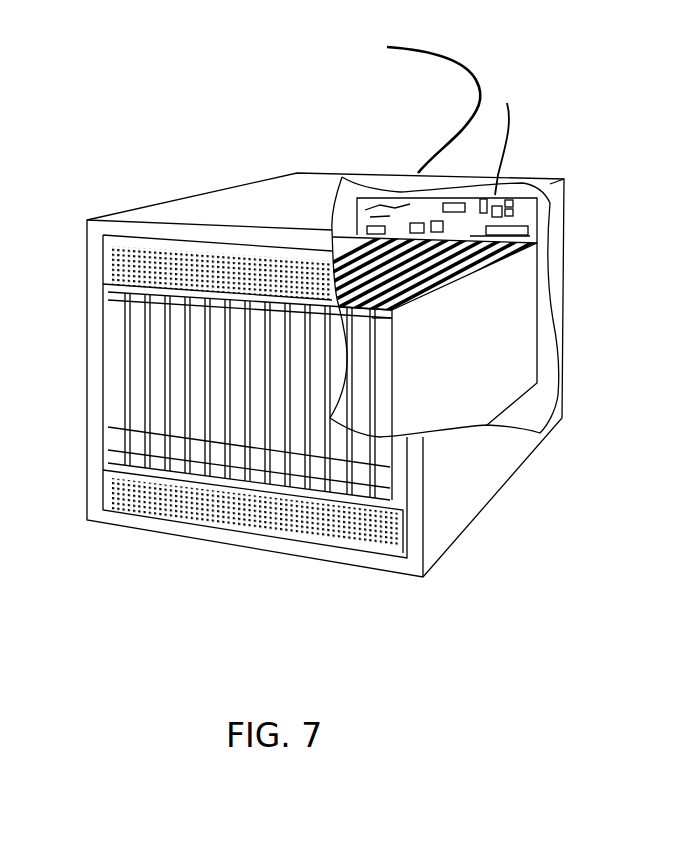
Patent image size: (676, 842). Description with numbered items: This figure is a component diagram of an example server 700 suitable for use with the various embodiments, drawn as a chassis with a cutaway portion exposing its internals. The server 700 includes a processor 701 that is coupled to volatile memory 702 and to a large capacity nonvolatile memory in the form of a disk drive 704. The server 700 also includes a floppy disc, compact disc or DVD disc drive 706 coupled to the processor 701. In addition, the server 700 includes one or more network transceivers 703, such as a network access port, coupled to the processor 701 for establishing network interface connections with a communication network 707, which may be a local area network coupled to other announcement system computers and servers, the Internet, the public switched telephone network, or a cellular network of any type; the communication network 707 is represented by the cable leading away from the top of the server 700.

The server 700 is at (236, 188).
The processor 701 is at (453, 233).
The volatile memory 702 is at (517, 237).
The network transceivers 703 is at (155, 344).
The disk drive 704 is at (345, 218).
The DVD disc drive 706 is at (135, 372).
The communication network 707 is at (478, 90).